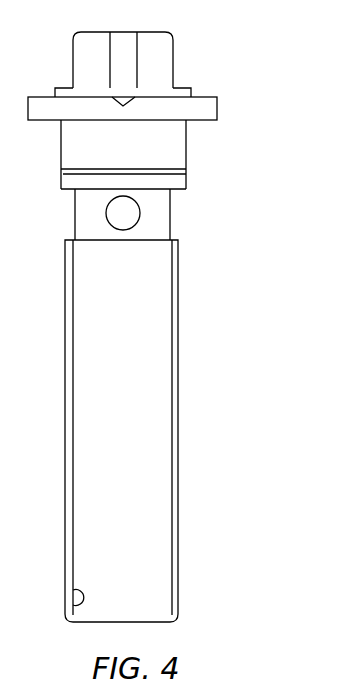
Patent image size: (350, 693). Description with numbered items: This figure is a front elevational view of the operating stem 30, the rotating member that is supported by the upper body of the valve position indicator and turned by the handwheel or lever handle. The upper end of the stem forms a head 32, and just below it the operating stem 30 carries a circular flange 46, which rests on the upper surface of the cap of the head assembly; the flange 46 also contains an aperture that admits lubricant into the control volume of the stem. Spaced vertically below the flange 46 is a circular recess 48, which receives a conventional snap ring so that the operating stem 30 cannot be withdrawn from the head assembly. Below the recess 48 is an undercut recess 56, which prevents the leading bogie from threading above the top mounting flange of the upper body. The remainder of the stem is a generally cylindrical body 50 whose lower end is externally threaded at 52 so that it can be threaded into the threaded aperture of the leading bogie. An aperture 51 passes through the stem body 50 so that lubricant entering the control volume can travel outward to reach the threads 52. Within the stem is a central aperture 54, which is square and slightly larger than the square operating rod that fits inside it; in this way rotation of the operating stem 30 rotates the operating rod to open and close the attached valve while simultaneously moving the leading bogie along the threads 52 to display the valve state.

The operating stem 30 is at (245, 294).
The bolt head 32 is at (173, 62).
The circular flange 46 is at (205, 97).
The circular recess 48 is at (186, 172).
The cylindrical body 50 is at (181, 378).
The aperture 51 is at (108, 215).
The external threads 52 is at (178, 428).
The central aperture 54 is at (70, 605).
The undercut recess 56 is at (170, 215).